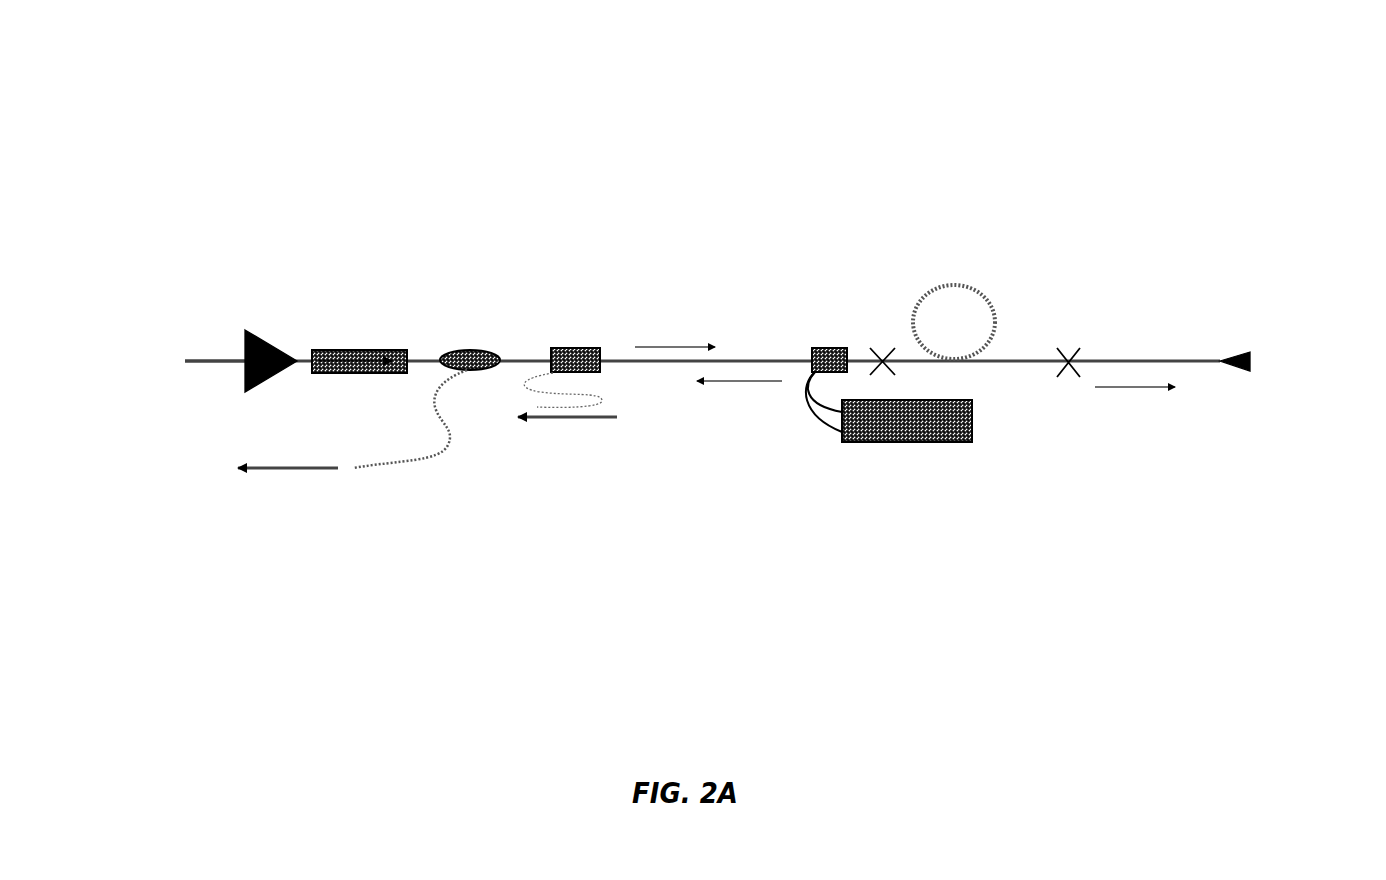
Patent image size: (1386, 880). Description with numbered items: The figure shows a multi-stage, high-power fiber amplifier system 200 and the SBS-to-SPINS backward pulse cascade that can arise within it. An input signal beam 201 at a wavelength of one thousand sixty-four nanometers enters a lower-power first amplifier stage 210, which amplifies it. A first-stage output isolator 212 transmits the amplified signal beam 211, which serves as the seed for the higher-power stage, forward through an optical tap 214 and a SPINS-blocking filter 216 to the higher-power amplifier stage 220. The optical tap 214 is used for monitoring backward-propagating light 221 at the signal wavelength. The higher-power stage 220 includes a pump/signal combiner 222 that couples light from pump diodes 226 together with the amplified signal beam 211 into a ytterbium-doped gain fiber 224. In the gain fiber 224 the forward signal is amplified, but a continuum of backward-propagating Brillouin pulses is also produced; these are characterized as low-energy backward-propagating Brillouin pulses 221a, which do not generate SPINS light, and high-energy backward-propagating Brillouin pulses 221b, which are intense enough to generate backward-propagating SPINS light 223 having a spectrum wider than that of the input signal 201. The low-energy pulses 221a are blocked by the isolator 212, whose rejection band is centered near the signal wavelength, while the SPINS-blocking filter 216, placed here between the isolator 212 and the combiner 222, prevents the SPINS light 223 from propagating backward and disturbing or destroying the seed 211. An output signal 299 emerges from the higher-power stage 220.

The multi-stage fiber amplifier 200 is at (1066, 221).
The signal beam 201 is at (157, 369).
The first amplifier stage 210 is at (225, 329).
The amplified signal beam 211 is at (675, 329).
The first-stage output isolator 212 is at (359, 315).
The optical tap 214 is at (496, 347).
The SPINS-blocking filter 216 is at (597, 329).
The higher-power amplifier stage 220 is at (986, 412).
The backward-propagating light 221 is at (281, 512).
The low-energy backward-propagating Brillouin pulses 221a is at (1171, 405).
The high-energy backward-propagating Brillouin pulses 221b is at (738, 387).
The pump/signal combiner 222 is at (824, 325).
The backward-propagating SPINS light 223 is at (565, 456).
The ytterbium-doped fiber 224 is at (952, 298).
The pump diodes 226 is at (889, 420).
The output signal 299 is at (1292, 353).